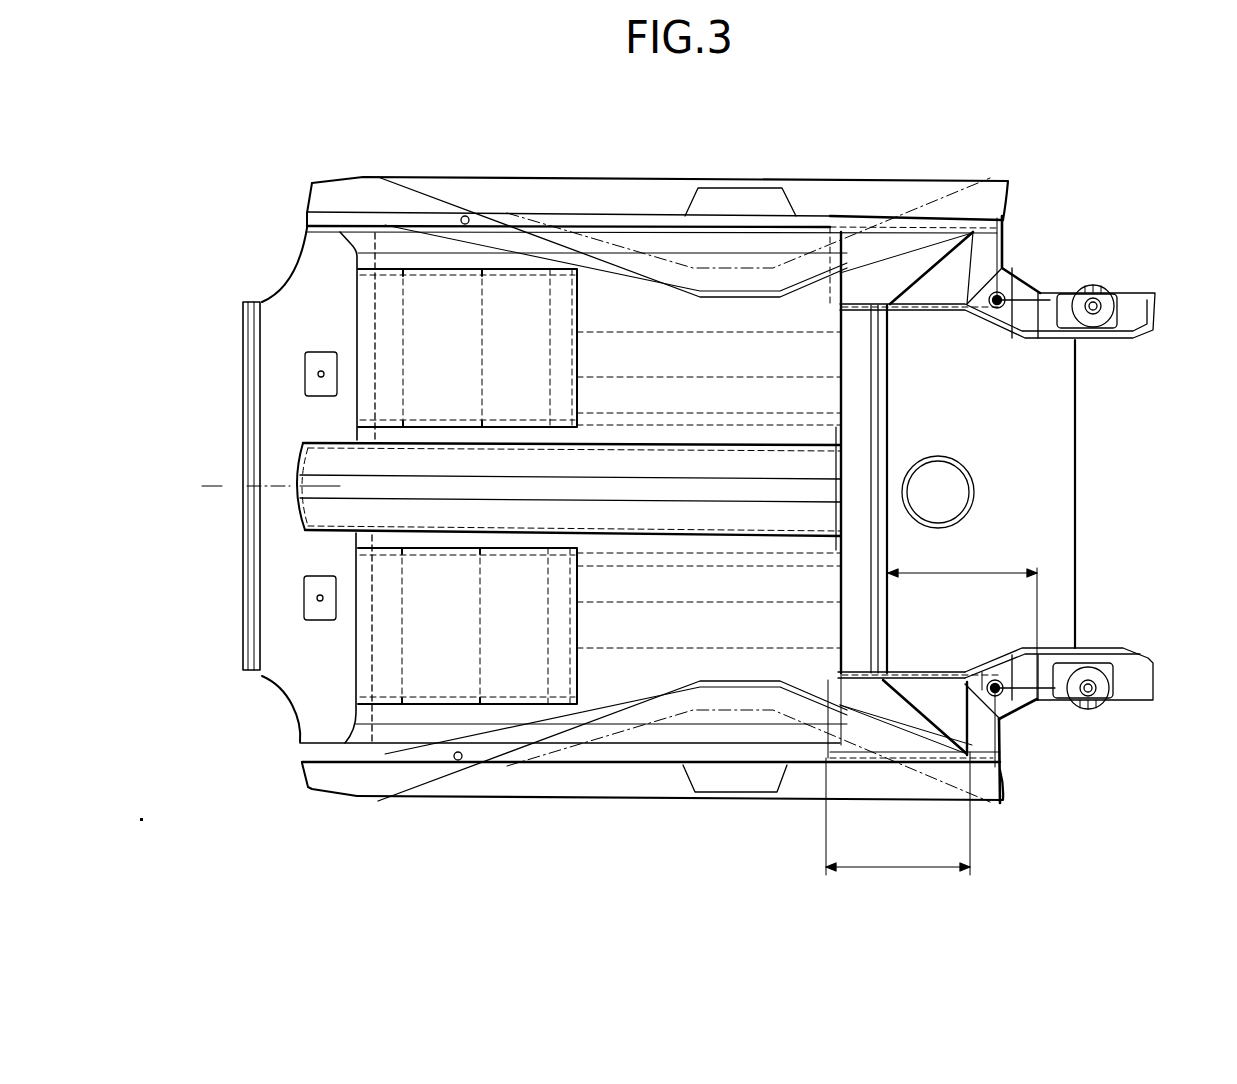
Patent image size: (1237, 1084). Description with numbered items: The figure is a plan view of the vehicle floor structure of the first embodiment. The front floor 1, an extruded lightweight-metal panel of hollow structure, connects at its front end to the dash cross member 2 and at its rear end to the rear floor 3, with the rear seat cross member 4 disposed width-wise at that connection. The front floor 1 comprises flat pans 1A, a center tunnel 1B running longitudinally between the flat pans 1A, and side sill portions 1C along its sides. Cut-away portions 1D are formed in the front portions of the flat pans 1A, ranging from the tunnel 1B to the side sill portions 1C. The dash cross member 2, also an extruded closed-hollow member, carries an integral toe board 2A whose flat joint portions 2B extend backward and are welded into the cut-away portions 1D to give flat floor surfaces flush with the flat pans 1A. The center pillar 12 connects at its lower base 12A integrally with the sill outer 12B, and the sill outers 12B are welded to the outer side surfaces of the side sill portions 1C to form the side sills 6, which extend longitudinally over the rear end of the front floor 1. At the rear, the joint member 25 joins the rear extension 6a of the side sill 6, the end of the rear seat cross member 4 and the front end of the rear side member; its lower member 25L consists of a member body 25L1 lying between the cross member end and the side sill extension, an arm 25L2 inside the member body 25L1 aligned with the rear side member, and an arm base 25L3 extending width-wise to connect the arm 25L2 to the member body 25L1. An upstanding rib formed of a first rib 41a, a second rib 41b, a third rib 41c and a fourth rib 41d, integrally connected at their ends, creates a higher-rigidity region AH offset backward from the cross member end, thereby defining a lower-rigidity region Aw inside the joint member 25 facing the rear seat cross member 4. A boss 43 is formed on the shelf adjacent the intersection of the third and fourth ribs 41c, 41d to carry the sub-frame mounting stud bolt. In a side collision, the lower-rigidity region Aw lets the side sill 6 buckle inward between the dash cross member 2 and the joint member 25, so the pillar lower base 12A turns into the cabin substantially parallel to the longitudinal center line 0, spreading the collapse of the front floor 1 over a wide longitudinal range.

The longitudinal center line 0 is at (222, 486).
The front floor 1 is at (812, 355).
The flat pans 1A is at (585, 343).
The center tunnel 1B is at (568, 435).
The side sill portions 1C is at (592, 214).
The cut-away portions 1D is at (568, 313).
The dash cross member 2 is at (236, 536).
The toe board 2A is at (262, 616).
The flat joint portions 2B is at (382, 313).
The rear floor 3 is at (1085, 502).
The rear seat cross member 4 is at (882, 445).
The side sills 6 is at (528, 205).
The rear extension of the side sill 6a is at (893, 217).
The center pillar 12 is at (612, 490).
The lower base of center pillar 12A is at (738, 295).
The sill outers 12B is at (784, 178).
The joint member 25 is at (1018, 544).
The lower member 25L is at (952, 325).
The member body 25L1 is at (908, 670).
The arm 25L2 is at (1120, 703).
The arm base 25L3 is at (1025, 712).
The first rib 41a is at (915, 724).
The second rib 41b is at (952, 680).
The third rib 41c is at (982, 678).
The fourth rib 41d is at (1003, 737).
The boss 43 is at (995, 680).
The higher-rigidity region AH is at (962, 619).
The lower-rigidity region Aw is at (898, 826).